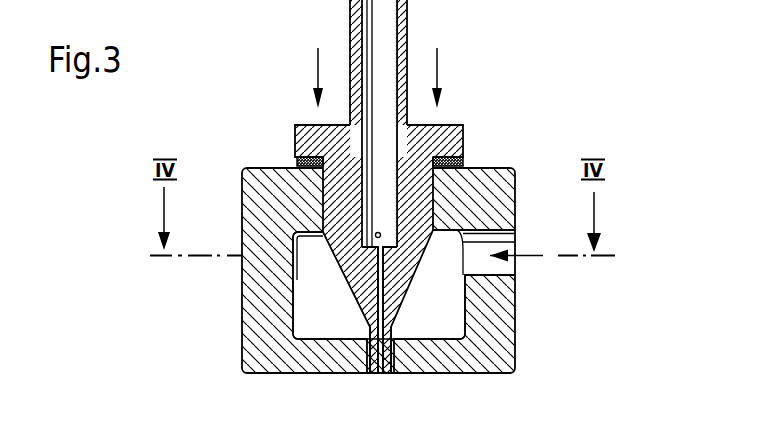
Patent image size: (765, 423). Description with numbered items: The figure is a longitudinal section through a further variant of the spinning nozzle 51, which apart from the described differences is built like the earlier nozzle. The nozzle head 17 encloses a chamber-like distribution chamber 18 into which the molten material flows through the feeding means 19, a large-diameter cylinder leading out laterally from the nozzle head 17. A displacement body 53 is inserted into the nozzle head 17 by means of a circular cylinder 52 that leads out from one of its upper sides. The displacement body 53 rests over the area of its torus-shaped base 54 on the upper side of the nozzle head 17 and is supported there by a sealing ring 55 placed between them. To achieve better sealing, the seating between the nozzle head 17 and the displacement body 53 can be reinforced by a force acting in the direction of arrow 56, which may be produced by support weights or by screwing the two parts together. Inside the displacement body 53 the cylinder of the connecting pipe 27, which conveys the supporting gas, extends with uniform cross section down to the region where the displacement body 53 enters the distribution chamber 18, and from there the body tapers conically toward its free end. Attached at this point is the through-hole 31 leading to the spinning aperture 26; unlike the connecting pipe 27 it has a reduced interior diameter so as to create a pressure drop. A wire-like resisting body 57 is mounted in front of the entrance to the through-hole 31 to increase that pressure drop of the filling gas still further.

The nozzle head 17 is at (263, 374).
The distribution chamber 18 is at (333, 315).
The feeding means 19 is at (517, 268).
The spinning aperture 26 is at (368, 375).
The connecting pipe 27 is at (350, 36).
The through-hole 31 is at (386, 331).
The spinning nozzle 51 is at (242, 322).
The circular cylinder 52 is at (427, 201).
The displacement body 53 is at (323, 195).
The torus-shaped base 54 is at (294, 134).
The sealing ring 55 is at (463, 157).
The arrow 56 is at (317, 72).
The wire-like resisting body 57 is at (379, 232).